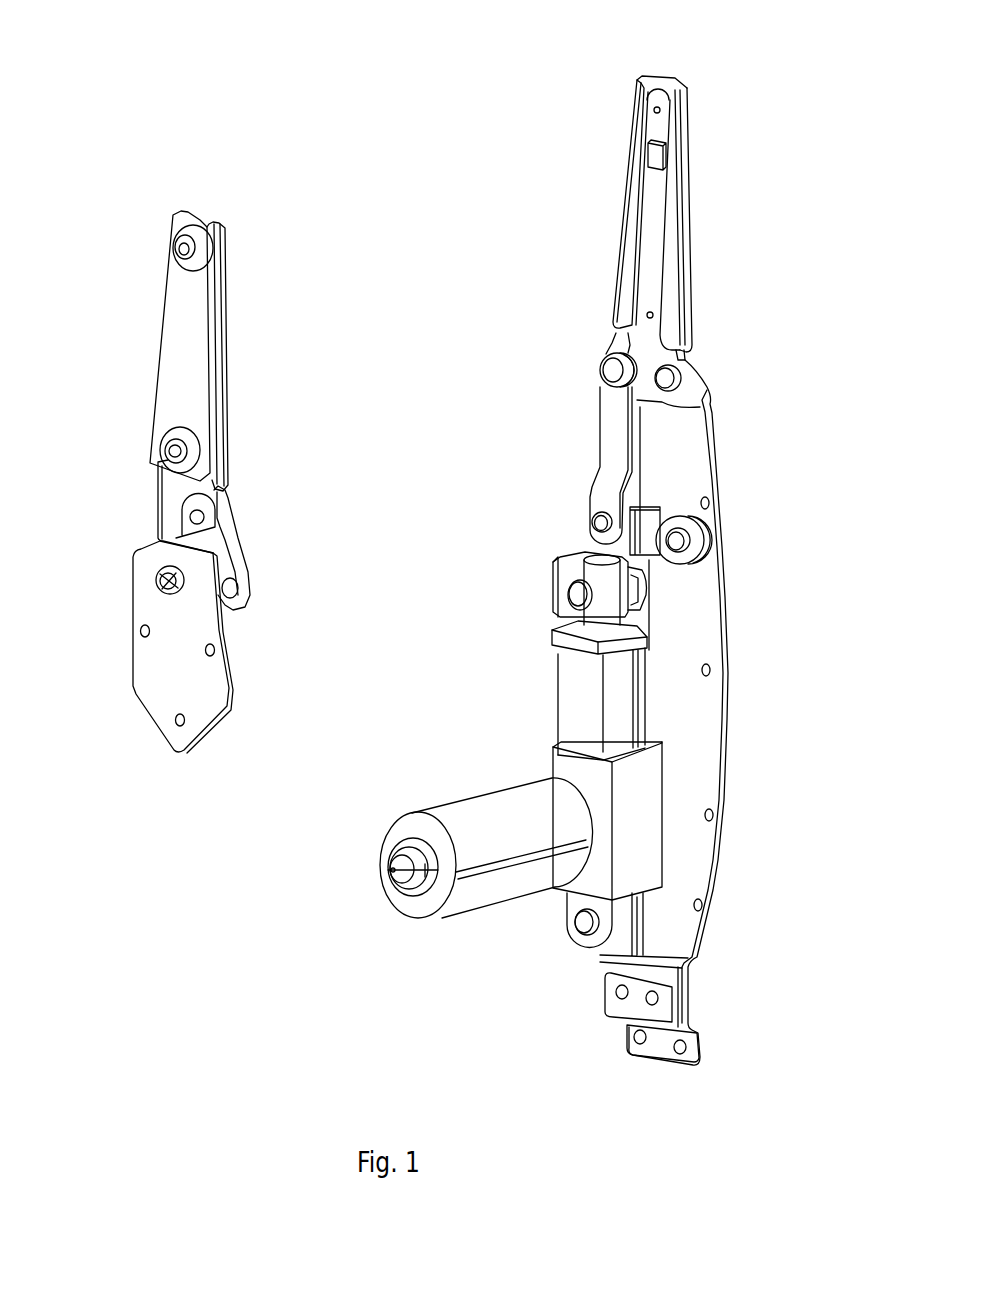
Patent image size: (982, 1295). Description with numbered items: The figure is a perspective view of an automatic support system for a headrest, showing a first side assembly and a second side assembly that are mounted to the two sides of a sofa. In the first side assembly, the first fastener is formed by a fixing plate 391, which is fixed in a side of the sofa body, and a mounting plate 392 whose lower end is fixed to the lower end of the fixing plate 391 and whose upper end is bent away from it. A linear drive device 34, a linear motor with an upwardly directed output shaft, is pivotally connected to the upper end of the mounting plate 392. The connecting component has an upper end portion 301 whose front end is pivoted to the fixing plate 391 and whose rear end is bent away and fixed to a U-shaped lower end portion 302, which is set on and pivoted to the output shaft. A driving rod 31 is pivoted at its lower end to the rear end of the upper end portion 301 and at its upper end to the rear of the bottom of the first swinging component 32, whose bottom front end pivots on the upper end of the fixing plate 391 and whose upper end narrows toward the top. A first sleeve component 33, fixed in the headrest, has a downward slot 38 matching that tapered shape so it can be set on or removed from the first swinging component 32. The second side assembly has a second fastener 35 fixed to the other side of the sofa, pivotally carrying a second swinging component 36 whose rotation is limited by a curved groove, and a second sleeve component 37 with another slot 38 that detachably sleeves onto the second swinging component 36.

The slot 38 is at (210, 221).
The second sleeve component 37 is at (173, 358).
The second swinging component 36 is at (168, 500).
The second fastener 35 is at (167, 697).
The first sleeve component 33 is at (628, 263).
The first swinging component 32 is at (652, 217).
The driving rod 31 is at (608, 432).
The upper end portion 301 is at (648, 520).
The lower end portion 302 is at (560, 590).
The linear drive device 34 is at (568, 662).
The fixing plate 391 is at (705, 708).
The mounting plate 392 is at (637, 1005).